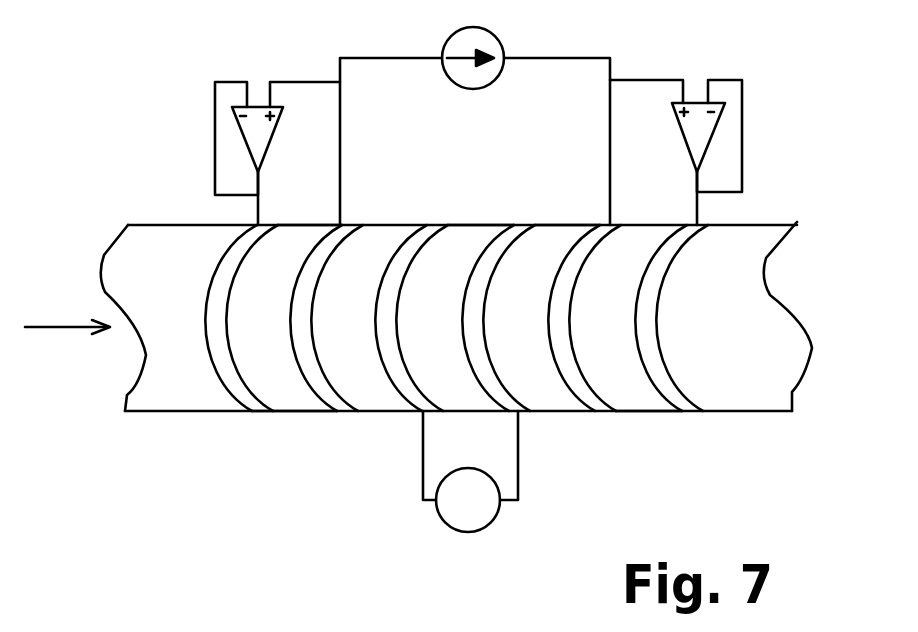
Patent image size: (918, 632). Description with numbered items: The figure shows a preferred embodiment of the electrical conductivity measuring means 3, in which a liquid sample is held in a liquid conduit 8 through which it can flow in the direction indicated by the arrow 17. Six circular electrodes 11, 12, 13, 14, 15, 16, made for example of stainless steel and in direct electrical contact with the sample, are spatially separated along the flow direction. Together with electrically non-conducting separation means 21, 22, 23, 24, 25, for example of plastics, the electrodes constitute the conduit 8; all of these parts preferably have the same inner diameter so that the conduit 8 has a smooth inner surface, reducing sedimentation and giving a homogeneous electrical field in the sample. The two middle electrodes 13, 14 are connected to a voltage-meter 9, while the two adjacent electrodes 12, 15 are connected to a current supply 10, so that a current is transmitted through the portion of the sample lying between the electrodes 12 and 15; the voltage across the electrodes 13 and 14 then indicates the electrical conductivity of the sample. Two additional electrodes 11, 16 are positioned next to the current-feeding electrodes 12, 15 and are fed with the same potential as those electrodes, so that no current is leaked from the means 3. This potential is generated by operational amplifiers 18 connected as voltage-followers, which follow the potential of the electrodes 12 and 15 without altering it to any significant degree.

The electrical conductivity measuring means 3 is at (775, 162).
The liquid conduit 8 is at (813, 350).
The voltage-meter 9 is at (490, 522).
The current supply 10 is at (455, 88).
The electrode 11 is at (258, 411).
The electrode 12 is at (346, 411).
The electrode 13 is at (437, 225).
The electrode 14 is at (524, 225).
The electrode 15 is at (606, 411).
The electrode 16 is at (694, 411).
The arrow 17 is at (67, 305).
The operational amplifier 18 is at (281, 145).
The separation means 21 is at (294, 411).
The separation means 22 is at (390, 226).
The separation means 23 is at (478, 226).
The separation means 24 is at (568, 226).
The separation means 25 is at (640, 411).